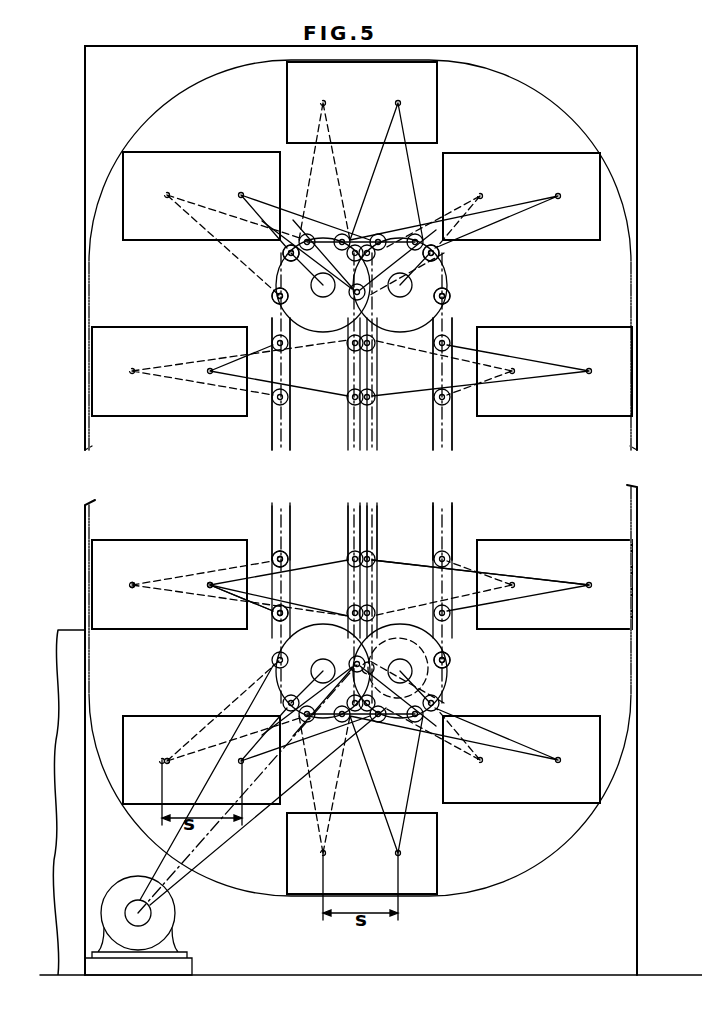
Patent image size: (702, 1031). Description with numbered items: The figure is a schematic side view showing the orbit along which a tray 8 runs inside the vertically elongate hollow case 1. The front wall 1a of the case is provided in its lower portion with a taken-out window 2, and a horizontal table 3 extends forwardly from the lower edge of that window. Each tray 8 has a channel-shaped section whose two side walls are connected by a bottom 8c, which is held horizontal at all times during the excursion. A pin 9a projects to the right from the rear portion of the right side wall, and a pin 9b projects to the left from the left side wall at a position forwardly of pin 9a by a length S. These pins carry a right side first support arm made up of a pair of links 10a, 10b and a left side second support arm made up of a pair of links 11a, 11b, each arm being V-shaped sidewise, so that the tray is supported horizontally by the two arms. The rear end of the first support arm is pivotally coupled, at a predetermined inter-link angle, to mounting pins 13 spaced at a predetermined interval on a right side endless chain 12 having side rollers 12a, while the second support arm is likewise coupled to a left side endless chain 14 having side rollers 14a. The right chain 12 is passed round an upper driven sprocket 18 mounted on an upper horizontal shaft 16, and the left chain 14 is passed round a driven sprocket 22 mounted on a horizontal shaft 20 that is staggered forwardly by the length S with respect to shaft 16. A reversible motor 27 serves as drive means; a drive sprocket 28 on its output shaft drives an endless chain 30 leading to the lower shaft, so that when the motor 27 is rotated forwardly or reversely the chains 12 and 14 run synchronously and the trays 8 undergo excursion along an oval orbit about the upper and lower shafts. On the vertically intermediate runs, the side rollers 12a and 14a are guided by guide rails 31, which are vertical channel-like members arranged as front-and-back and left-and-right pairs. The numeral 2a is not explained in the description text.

The hollow case 1 is at (142, 46).
The front wall 1a is at (85, 92).
The taken-out window 2 is at (85, 600).
The drive pulley 2a is at (450, 668).
The horizontal table 3 is at (62, 630).
The tray 8 is at (140, 540).
The bottom 8c is at (158, 632).
The pin 9a is at (210, 582).
The pin 9b is at (132, 590).
The link 10a is at (300, 560).
The link 10b is at (262, 630).
The link 11a is at (178, 560).
The link 11b is at (180, 740).
The endless chain 12 is at (447, 505).
The side roller 12a is at (384, 556).
The mounting pin 13 is at (352, 540).
The endless chain 14 is at (284, 520).
The side roller 14a is at (280, 548).
The horizontal shaft 16 is at (452, 296).
The upper driven sprocket 18 is at (444, 261).
The horizontal shaft 20 is at (270, 296).
The driven sprocket 22 is at (287, 260).
The reversible motor 27 is at (172, 913).
The drive sprocket 28 is at (138, 913).
The endless chain 30 is at (238, 872).
The guide rail 31 is at (290, 408).